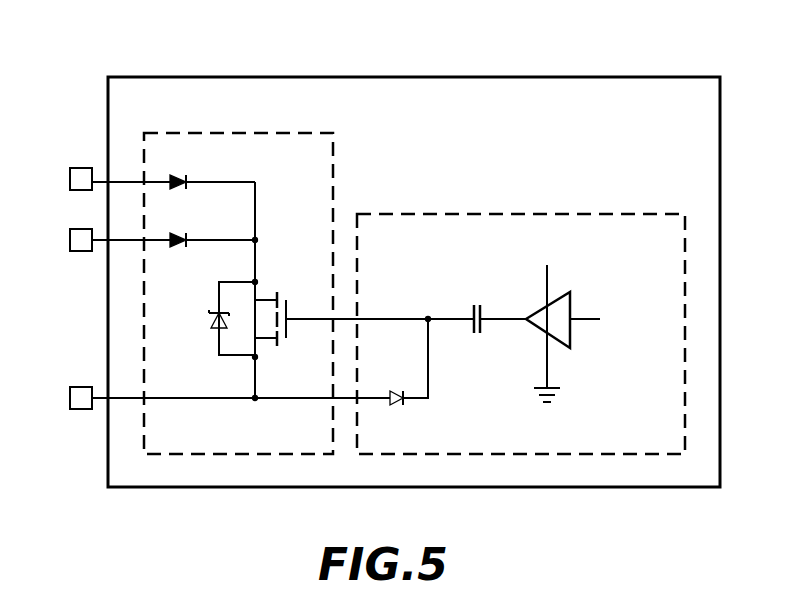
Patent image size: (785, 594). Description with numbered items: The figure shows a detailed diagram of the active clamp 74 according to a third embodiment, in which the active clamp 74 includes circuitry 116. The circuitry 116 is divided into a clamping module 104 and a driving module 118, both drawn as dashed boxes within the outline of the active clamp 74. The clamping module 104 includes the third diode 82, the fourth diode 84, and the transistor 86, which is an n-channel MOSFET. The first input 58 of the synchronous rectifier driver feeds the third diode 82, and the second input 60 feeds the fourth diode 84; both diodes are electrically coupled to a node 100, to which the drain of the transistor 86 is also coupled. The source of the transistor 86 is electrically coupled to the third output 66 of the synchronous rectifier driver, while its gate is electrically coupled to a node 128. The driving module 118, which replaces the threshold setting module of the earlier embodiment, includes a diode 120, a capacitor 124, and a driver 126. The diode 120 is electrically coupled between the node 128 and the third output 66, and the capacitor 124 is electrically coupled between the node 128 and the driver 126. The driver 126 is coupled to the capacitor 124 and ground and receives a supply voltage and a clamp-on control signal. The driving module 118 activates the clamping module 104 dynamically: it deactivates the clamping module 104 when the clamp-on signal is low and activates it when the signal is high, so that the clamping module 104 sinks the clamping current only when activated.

The active clamp 74 is at (160, 77).
The clamping module 104 is at (203, 133).
The driving module 118 is at (415, 214).
The circuitry 116 is at (566, 148).
The first input 58 is at (70, 182).
The second input 60 is at (70, 240).
The third output 66 is at (70, 398).
The third diode 82 is at (178, 175).
The fourth diode 84 is at (178, 233).
The transistor 86 is at (219, 298).
The node 100 is at (255, 240).
The diode 120 is at (394, 405).
The capacitor 124 is at (477, 305).
The driver 126 is at (541, 330).
The node 128 is at (428, 319).